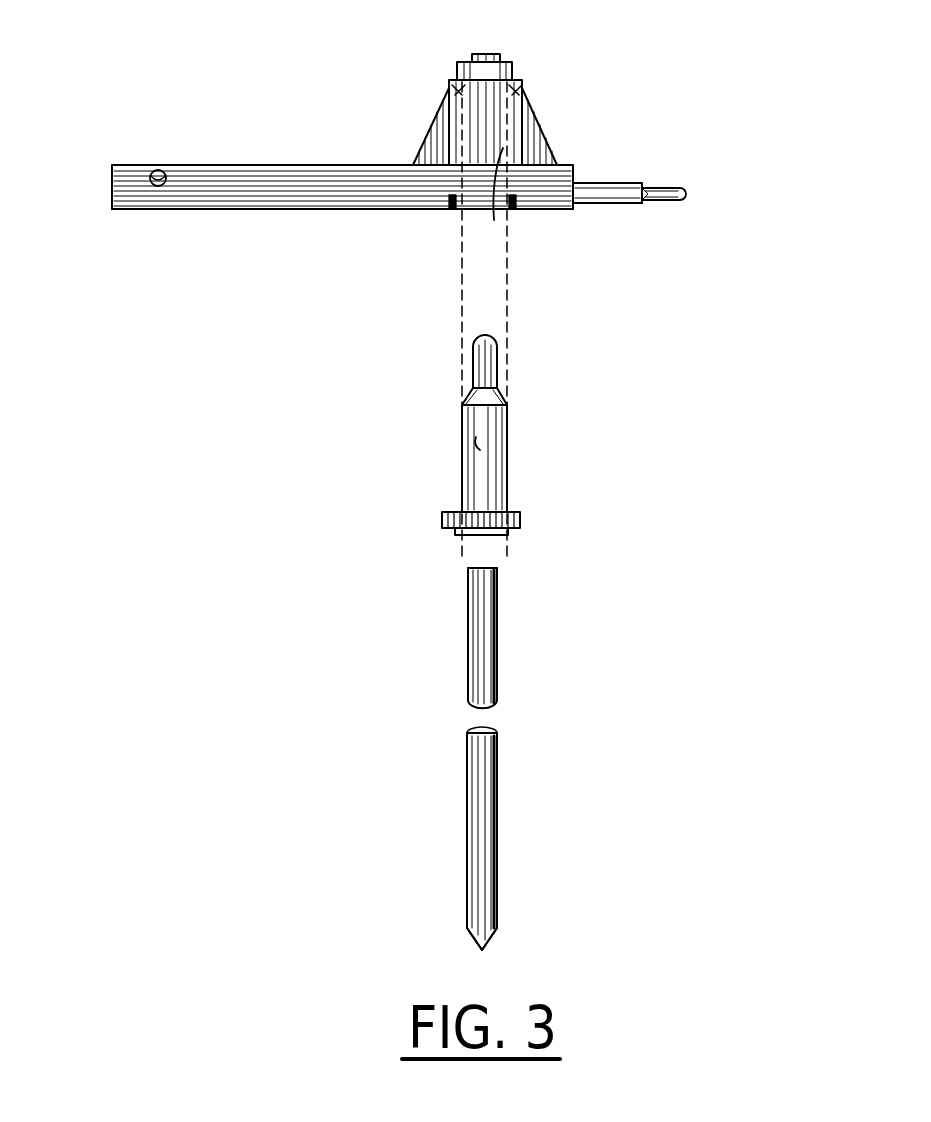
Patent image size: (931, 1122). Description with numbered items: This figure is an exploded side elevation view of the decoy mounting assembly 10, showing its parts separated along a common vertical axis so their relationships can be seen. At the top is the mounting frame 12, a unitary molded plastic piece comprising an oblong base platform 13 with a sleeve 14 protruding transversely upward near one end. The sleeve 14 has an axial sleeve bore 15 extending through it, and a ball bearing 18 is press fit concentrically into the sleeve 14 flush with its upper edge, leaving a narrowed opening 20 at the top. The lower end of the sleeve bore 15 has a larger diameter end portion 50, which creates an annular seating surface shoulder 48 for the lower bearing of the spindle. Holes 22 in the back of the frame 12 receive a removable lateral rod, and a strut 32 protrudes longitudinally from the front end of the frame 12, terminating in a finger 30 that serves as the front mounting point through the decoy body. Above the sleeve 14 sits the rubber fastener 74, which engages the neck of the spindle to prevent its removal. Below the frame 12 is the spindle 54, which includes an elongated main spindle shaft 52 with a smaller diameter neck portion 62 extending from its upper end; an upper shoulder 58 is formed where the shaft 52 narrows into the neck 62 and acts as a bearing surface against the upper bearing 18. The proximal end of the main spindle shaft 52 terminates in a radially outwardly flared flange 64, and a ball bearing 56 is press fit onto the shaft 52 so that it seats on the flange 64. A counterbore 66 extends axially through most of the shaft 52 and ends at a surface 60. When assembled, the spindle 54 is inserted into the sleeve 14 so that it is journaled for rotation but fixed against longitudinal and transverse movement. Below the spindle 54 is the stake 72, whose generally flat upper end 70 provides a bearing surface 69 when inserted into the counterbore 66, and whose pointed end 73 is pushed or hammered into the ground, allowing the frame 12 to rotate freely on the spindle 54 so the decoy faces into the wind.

The decoy mounting assembly 10 is at (514, 50).
The mounting frame 12 is at (183, 158).
The base platform 13 is at (152, 212).
The sleeve 14 is at (455, 130).
The sleeve bore 15 is at (494, 220).
The upper ball bearing 18 is at (450, 90).
The narrowed opening 20 is at (496, 80).
The holes 22 is at (156, 172).
The finger 30 is at (666, 187).
The strut 32 is at (628, 206).
The seating surface shoulder 48 is at (452, 210).
The larger diameter end portion 50 is at (513, 210).
The main spindle shaft 52 is at (462, 458).
The spindle 54 is at (506, 485).
The lower ball bearing 56 is at (520, 523).
The upper shoulder 58 is at (470, 393).
The surface at upper end of counterbore 60 is at (480, 450).
The neck portion 62 is at (500, 368).
The flange 64 is at (462, 535).
The counterbore 66 is at (484, 536).
The bearing surface 69 is at (478, 563).
The upper end of stake 70 is at (497, 625).
The stake 72 is at (497, 826).
The pointed end 73 is at (488, 946).
The rubber fastener 74 is at (510, 68).